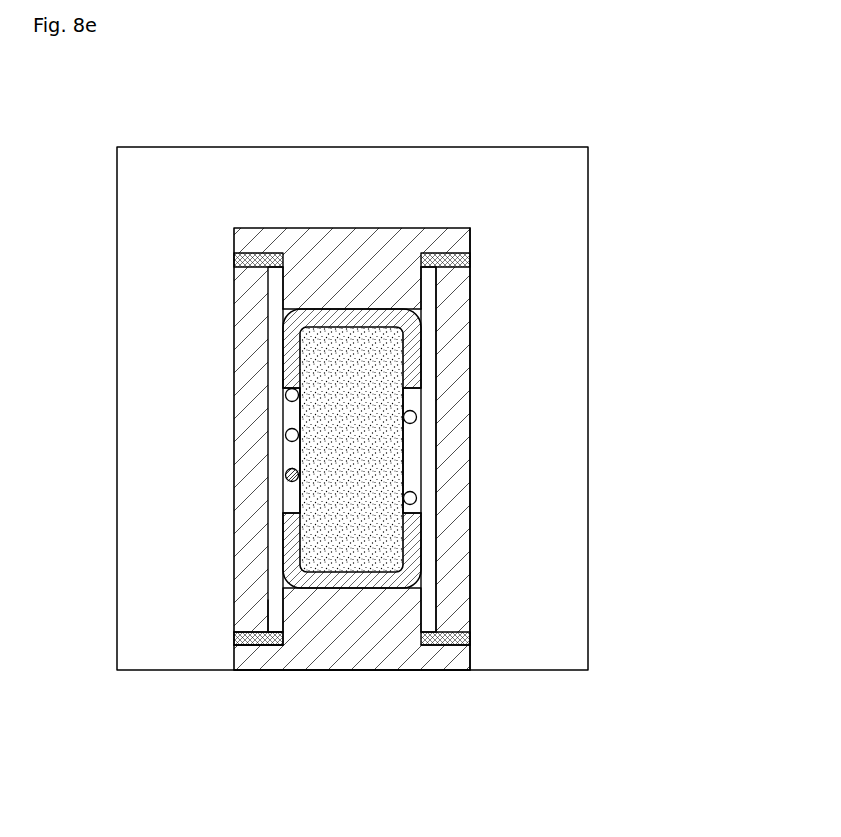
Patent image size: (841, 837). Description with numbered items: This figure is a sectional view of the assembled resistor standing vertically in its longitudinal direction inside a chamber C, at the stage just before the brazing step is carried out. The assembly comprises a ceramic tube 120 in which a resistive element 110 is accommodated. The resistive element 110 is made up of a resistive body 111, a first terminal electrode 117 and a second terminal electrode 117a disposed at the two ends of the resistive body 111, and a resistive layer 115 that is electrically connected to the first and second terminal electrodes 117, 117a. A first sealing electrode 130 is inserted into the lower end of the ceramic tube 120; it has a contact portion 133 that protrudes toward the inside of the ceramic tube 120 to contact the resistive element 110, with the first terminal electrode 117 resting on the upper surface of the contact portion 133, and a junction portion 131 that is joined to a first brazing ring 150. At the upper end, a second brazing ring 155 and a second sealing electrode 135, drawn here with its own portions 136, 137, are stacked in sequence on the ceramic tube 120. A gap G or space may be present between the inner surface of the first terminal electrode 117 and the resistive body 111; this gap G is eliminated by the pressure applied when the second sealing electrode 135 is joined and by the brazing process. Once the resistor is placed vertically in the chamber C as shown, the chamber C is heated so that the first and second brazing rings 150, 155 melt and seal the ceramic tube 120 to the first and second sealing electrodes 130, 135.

The chamber C is at (117, 194).
The gap G is at (395, 310).
The resistive element 110 is at (394, 448).
The resistive body 111 is at (353, 497).
The resistive layer 115 is at (414, 421).
The first terminal electrode 117 is at (422, 543).
The second terminal electrode 117a is at (413, 353).
The ceramic tube 120 is at (455, 607).
The first sealing electrode 130 is at (242, 733).
The junction portion 131 is at (247, 647).
The contact portion 133 is at (302, 598).
The second sealing electrode 135 is at (240, 88).
The upper flange 136 is at (268, 252).
The upper stem 137 is at (316, 308).
The first brazing ring 150 is at (442, 647).
The second brazing ring 155 is at (451, 253).